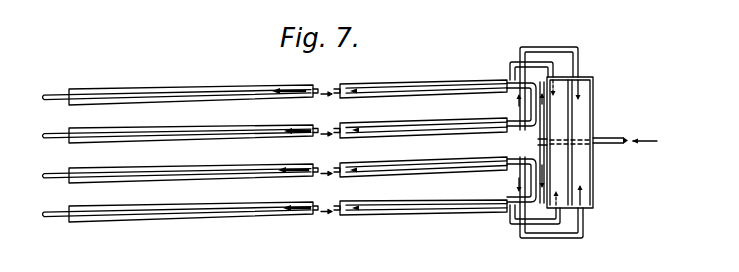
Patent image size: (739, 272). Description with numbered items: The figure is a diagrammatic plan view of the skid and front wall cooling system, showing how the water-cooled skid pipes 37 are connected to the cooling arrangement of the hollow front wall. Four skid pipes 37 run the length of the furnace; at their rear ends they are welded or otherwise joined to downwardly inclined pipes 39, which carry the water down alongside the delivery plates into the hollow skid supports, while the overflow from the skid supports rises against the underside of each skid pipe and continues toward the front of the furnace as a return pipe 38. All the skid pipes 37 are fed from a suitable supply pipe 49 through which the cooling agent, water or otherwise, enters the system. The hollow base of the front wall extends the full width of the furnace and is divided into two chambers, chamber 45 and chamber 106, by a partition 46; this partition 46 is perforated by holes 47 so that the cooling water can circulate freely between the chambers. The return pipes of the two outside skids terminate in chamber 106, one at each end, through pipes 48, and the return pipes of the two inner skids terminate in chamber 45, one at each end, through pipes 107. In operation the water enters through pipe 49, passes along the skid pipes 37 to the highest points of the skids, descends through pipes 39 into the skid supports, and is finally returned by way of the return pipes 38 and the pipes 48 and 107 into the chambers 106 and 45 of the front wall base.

The skid pipe 37 is at (383, 86).
The return pipe 38 is at (319, 88).
The downwardly inclined pipe 39 is at (58, 96).
The chamber 45 is at (588, 172).
The partition 46 is at (584, 157).
The holes 47 is at (572, 132).
The pipe 48 is at (559, 226).
The feed pipe 49 is at (625, 133).
The chamber 106 is at (558, 110).
The pipe 107 is at (578, 68).